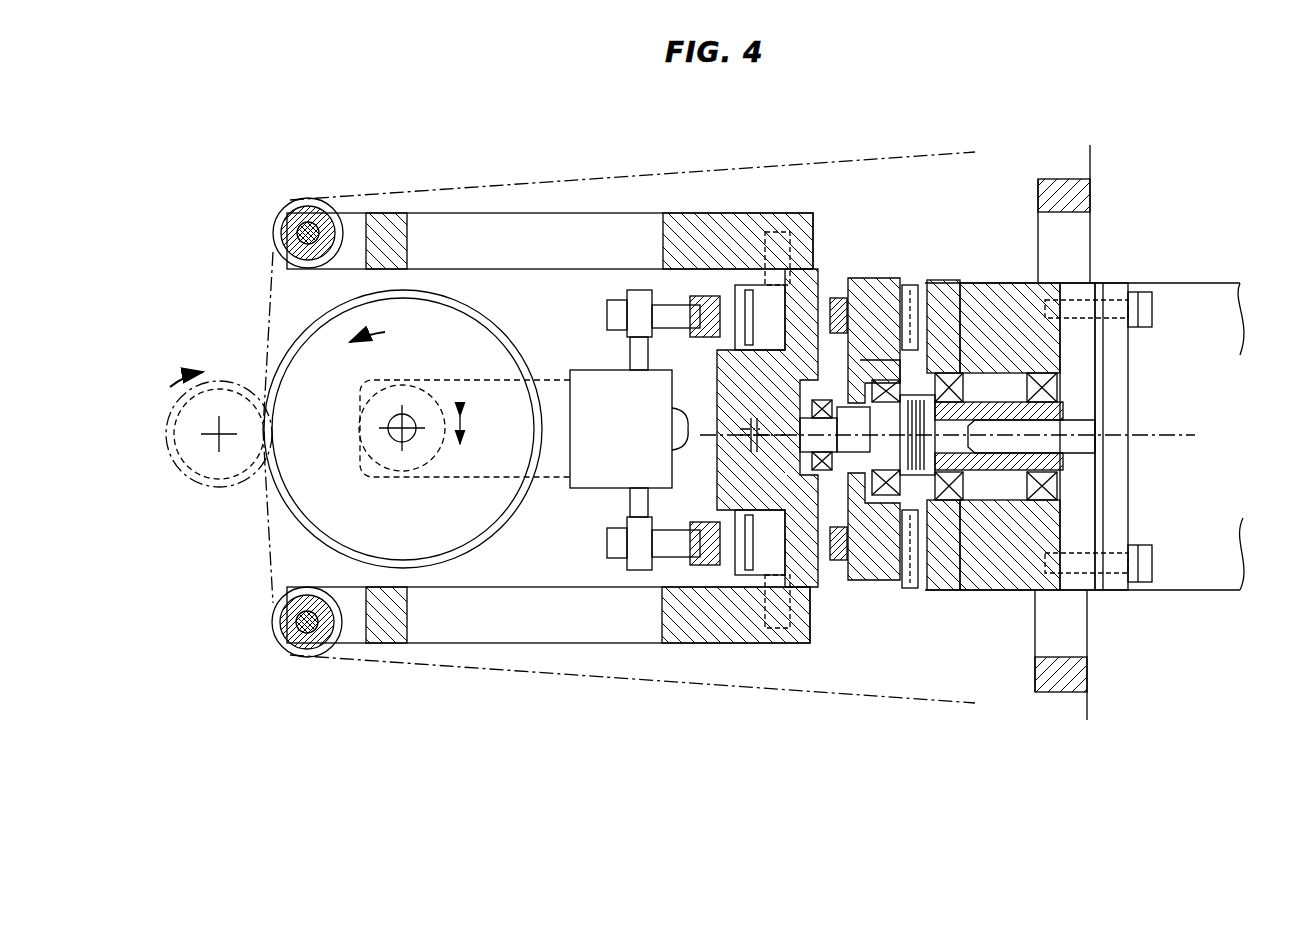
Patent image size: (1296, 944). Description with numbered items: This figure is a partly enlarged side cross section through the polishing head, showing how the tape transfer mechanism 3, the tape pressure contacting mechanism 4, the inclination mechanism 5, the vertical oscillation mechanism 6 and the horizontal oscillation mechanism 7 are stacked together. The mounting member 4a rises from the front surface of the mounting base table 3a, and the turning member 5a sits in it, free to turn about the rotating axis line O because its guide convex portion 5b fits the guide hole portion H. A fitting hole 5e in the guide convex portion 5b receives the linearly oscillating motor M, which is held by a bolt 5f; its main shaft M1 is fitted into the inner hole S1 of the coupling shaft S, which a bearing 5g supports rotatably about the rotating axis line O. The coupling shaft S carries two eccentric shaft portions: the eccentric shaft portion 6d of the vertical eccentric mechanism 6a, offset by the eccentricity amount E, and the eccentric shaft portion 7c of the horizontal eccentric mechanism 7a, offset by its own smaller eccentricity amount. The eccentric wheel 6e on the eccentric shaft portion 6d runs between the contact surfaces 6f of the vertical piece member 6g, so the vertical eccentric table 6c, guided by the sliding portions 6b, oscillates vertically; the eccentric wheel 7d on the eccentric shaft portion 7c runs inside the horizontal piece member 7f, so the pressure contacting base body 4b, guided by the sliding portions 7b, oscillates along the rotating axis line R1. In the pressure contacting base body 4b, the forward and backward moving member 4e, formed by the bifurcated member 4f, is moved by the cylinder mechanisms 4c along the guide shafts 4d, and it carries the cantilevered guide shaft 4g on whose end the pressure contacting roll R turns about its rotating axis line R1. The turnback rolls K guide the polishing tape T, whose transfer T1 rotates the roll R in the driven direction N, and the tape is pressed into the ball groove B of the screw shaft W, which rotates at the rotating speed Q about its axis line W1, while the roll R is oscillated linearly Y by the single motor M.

The tape transfer mechanism 3 is at (627, 700).
The mounting base table 3a is at (1085, 158).
The tape pressure contacting mechanism 4 is at (612, 572).
The mounting member 4a is at (1060, 682).
The pressure contacting base body 4b is at (612, 212).
The cylinder mechanism 4c is at (598, 297).
The guide shaft 4d is at (680, 428).
The forward and backward moving member 4e is at (580, 395).
The bifurcated member 4f is at (680, 628).
The guide shaft 4g is at (445, 432).
The inclination mechanism 5 is at (1017, 162).
The turning member 5a is at (995, 307).
The guide convex portion 5b is at (1092, 583).
The fitting hole 5e is at (1077, 295).
The bolt 5f is at (1143, 310).
The bearing 5g is at (948, 492).
The vertical oscillation mechanism 6 is at (918, 275).
The vertical eccentric mechanism 6a is at (930, 268).
The sliding portion 6b is at (907, 285).
The vertical eccentric table 6c is at (883, 452).
The eccentric shaft portion 6d is at (887, 478).
The eccentric wheel 6e is at (912, 480).
The contact surface 6f is at (893, 363).
The vertical piece member 6g is at (933, 355).
The horizontal oscillation mechanism 7 is at (838, 270).
The horizontal eccentric mechanism 7a is at (852, 283).
The sliding portion 7b is at (838, 298).
The eccentric shaft portion 7c is at (819, 470).
The eccentric wheel 7d is at (790, 300).
The horizontal piece member 7f is at (763, 300).
The turnback roll K is at (300, 218).
The rotation of the pressure contacting roll N is at (372, 320).
The polishing tape T is at (270, 317).
The transfer of the polishing tape T1 is at (538, 168).
The pressure contacting roll R is at (303, 372).
The rotating axis line R1 is at (395, 425).
The rotating speed Q is at (175, 370).
The screw shaft W is at (168, 462).
The axis line W1 is at (219, 436).
The ball groove B is at (188, 472).
The linear oscillation Y is at (398, 432).
The eccentricity amount E is at (765, 405).
The linearly oscillating motor M is at (1222, 330).
The main shaft M1 is at (1072, 430).
The rotating axis line O is at (1176, 435).
The coupling shaft S is at (1053, 462).
The inner hole S1 is at (1000, 470).
The guide hole portion H is at (1077, 218).